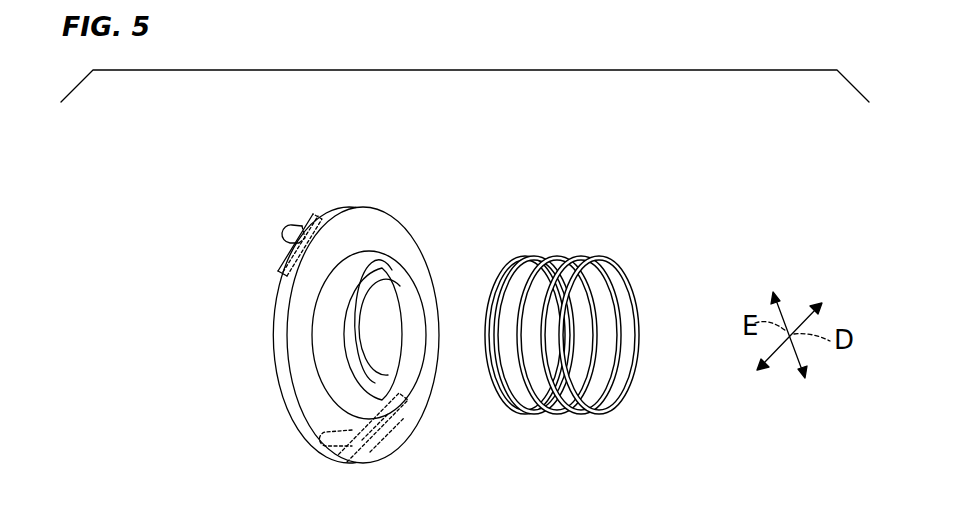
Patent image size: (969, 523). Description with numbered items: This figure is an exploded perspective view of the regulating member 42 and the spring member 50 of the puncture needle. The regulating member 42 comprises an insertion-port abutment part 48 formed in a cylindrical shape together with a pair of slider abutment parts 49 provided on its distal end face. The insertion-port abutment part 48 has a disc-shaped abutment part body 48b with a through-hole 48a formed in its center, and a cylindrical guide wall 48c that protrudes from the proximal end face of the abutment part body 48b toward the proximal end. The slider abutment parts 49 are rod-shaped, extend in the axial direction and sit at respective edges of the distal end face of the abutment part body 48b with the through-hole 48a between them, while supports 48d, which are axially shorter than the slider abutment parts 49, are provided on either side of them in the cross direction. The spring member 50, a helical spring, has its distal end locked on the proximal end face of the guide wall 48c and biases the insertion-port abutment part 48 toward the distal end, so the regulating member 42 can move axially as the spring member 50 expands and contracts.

The regulating member 42 is at (214, 173).
The insertion-port abutment part 48 is at (498, 128).
The through-hole 48a is at (378, 343).
The abutment part body 48b is at (378, 232).
The guide wall 48c is at (434, 302).
The supports 48d is at (316, 216).
The slider abutment parts 49 is at (283, 232).
The spring member 50 is at (630, 298).